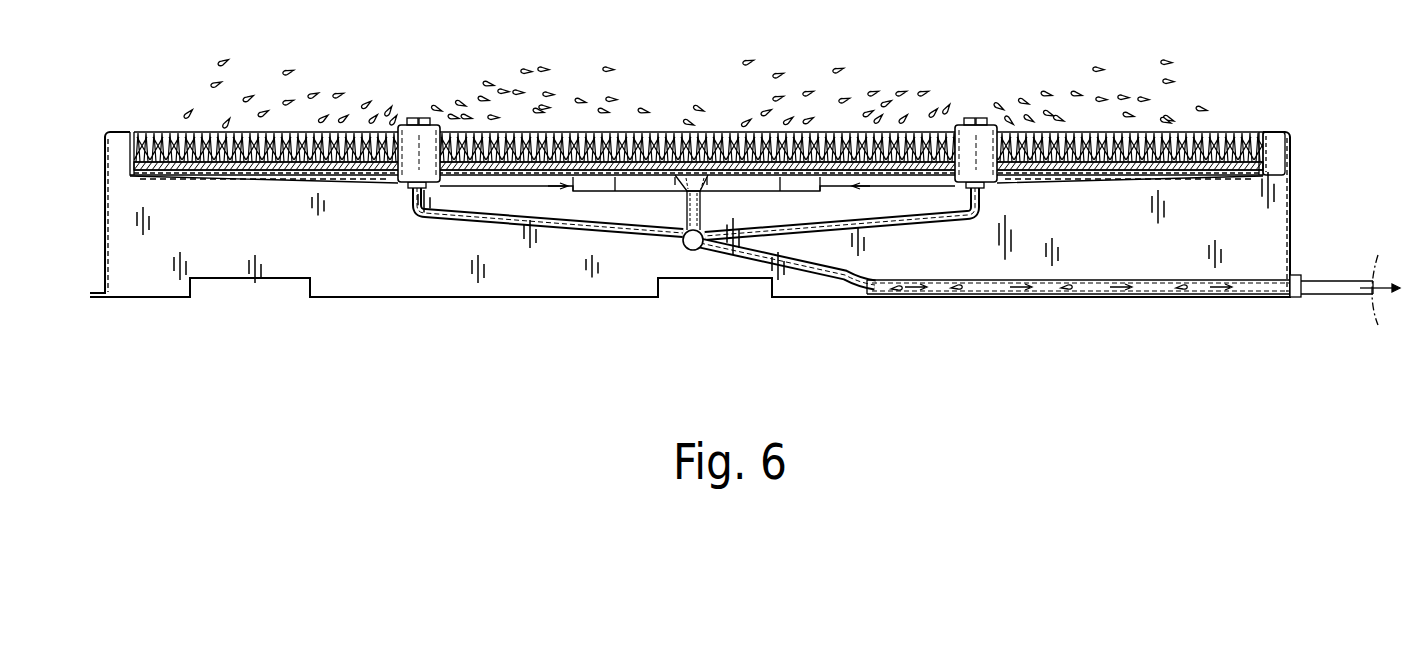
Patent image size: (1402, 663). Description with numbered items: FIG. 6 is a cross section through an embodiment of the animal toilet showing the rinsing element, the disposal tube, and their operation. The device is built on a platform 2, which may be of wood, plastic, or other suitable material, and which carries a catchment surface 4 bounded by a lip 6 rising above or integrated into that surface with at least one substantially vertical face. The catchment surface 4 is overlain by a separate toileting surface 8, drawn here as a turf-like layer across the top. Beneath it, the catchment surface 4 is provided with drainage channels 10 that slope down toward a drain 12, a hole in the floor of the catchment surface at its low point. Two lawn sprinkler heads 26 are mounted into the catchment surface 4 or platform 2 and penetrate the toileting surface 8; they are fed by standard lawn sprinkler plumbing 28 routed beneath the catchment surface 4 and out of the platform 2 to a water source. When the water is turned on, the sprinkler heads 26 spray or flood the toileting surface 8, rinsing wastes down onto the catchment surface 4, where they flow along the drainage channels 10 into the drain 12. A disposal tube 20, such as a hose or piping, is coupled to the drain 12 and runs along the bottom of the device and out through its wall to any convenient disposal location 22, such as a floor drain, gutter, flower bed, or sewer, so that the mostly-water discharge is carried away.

The platform 2 is at (1291, 150).
The catchment surface 4 is at (340, 177).
The lip 6 is at (1256, 136).
The toileting surface 8 is at (677, 132).
The drainage channels 10 is at (455, 187).
The drain 12 is at (690, 200).
The disposal tube 20 is at (888, 294).
The disposal location 22 is at (1370, 294).
The lawn sprinkler head 26 is at (420, 120).
The lawn sprinkler plumbing 28 is at (625, 232).